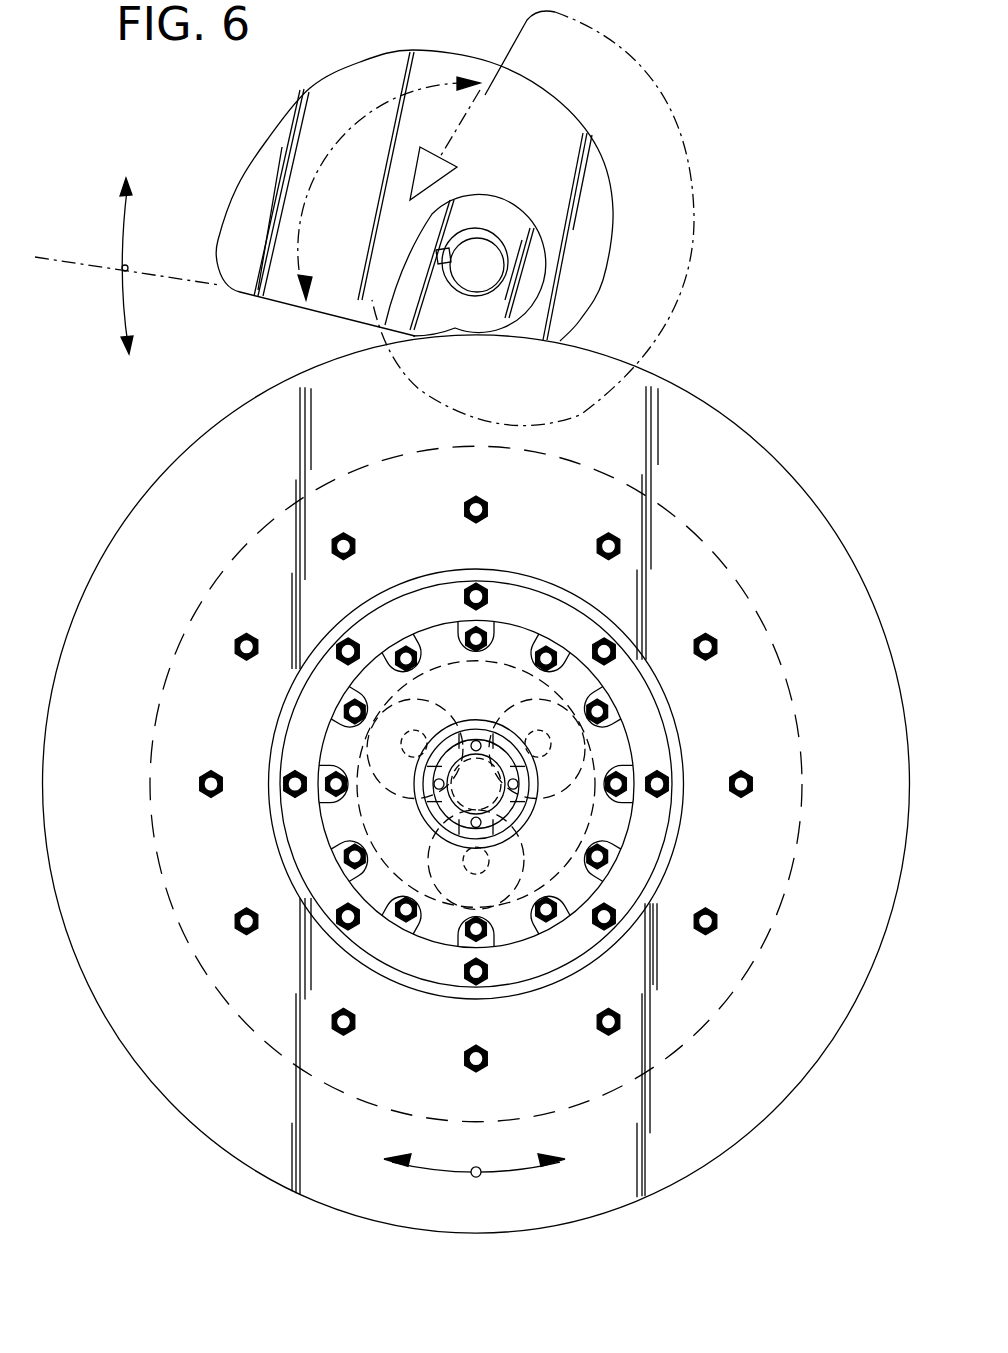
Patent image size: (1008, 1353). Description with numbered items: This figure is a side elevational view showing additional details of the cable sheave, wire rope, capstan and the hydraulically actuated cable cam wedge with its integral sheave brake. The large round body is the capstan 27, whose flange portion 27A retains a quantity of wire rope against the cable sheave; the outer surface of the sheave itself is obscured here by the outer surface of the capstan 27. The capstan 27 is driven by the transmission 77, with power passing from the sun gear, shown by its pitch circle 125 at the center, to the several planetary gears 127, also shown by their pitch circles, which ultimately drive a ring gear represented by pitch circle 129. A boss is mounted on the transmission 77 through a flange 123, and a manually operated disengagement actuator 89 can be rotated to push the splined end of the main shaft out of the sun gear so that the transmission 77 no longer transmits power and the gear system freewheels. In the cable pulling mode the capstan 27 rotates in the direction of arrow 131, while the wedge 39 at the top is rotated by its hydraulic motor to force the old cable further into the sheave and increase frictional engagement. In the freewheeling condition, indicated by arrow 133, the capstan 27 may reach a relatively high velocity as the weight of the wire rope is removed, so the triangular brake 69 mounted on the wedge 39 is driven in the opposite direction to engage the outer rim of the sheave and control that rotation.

The capstan 27 is at (768, 469).
The flange portion 27A is at (826, 573).
The wedge 39 is at (301, 89).
The brake 69 is at (443, 161).
The transmission 77 is at (511, 655).
The manually operated disengagement actuator 89 is at (460, 799).
The flange 123 is at (470, 812).
The pitch circle 125 is at (508, 803).
The planetary gears 127 is at (476, 784).
The pitch circle 129 is at (350, 742).
The arrow 131 is at (426, 1150).
The arrow 133 is at (512, 1150).